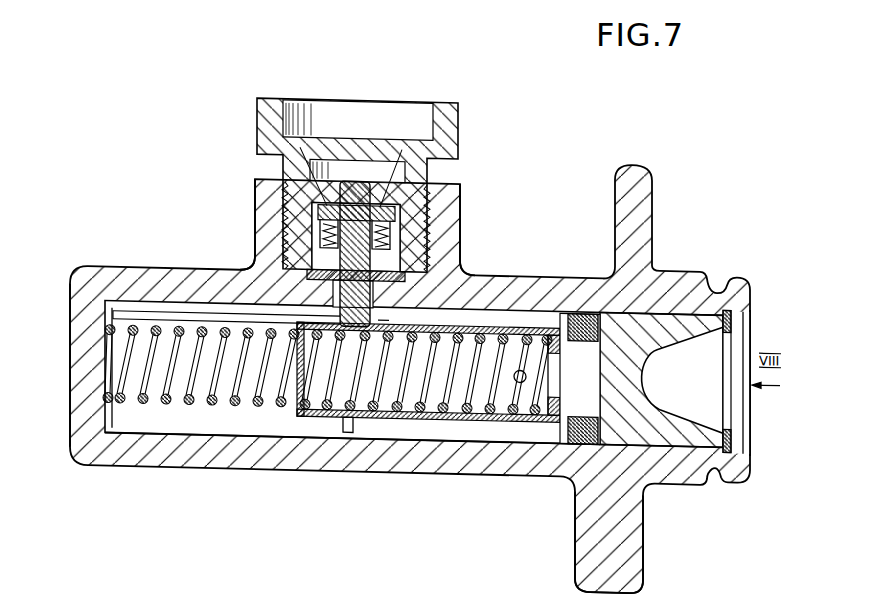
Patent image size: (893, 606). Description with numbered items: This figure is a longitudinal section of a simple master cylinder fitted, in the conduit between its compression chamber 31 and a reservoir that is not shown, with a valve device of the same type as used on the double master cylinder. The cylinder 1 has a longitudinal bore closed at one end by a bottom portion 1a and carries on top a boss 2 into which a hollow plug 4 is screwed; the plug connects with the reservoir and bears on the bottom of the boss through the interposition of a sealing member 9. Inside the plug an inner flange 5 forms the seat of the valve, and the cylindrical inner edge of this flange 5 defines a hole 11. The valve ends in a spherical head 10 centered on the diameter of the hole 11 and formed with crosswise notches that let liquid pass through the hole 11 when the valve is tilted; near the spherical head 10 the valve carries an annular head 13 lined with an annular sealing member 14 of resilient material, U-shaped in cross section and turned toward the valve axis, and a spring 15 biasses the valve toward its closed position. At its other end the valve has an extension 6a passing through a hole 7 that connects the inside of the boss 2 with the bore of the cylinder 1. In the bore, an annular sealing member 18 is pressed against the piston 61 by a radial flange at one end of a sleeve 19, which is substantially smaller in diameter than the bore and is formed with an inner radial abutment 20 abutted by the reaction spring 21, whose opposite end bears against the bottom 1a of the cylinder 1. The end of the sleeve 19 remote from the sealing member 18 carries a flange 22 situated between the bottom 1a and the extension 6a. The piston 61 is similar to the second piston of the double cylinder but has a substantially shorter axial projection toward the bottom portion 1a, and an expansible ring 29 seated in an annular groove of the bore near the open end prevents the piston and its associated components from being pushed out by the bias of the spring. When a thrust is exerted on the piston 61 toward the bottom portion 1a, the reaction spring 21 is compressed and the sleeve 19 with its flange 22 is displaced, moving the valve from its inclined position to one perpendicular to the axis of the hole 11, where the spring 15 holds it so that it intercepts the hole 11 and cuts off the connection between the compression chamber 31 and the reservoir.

The cylinder 1 is at (562, 273).
The bottom portion 1a is at (87, 386).
The boss 2 is at (268, 244).
The hollow plug 4 is at (453, 121).
The flange 5 is at (320, 185).
The extension 6a is at (393, 320).
The hole 7 is at (320, 303).
The sealing member 9 is at (433, 280).
The spherical head 10 is at (358, 178).
The hole 11 is at (340, 195).
The annular head 13 is at (283, 220).
The annular sealing member 14 is at (425, 205).
The spring 15 is at (382, 241).
The sealing member 18 is at (575, 413).
The sleeve 19 is at (405, 412).
The inner radial abutment 20 is at (533, 410).
The reaction spring 21 is at (163, 389).
The flange 22 is at (350, 420).
The expansible ring 29 is at (725, 311).
The compression chamber 31 is at (217, 418).
The piston 61 is at (677, 424).